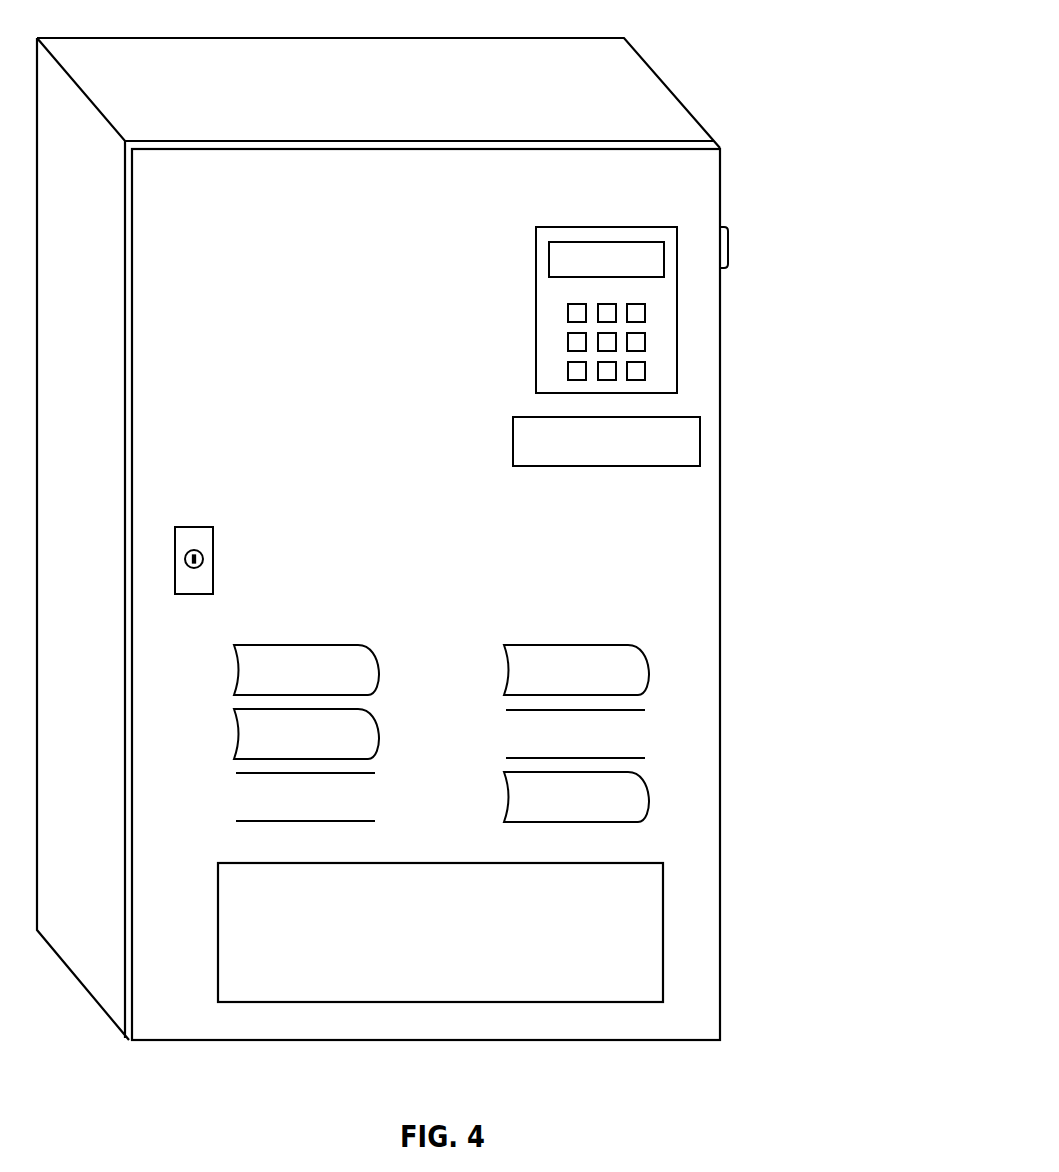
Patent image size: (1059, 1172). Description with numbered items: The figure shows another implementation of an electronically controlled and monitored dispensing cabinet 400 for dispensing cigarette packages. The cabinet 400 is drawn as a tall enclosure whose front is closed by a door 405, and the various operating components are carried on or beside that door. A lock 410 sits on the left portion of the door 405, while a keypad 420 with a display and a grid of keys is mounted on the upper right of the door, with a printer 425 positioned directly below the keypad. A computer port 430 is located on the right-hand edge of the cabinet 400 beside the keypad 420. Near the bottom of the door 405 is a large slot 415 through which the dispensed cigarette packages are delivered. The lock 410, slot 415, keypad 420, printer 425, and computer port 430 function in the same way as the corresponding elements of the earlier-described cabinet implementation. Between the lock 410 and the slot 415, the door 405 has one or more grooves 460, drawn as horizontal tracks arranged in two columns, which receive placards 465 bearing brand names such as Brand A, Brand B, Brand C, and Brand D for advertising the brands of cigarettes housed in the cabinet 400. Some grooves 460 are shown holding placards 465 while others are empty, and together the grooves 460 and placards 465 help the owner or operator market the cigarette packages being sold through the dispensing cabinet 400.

The dispensing cabinet 400 is at (658, 100).
The door 405 is at (148, 270).
The lock 410 is at (185, 559).
The slot 415 is at (643, 941).
The keypad 420 is at (658, 332).
The printer 425 is at (686, 442).
The computer port 430 is at (729, 248).
The grooves 460 is at (623, 710).
The placards 465 is at (237, 683).